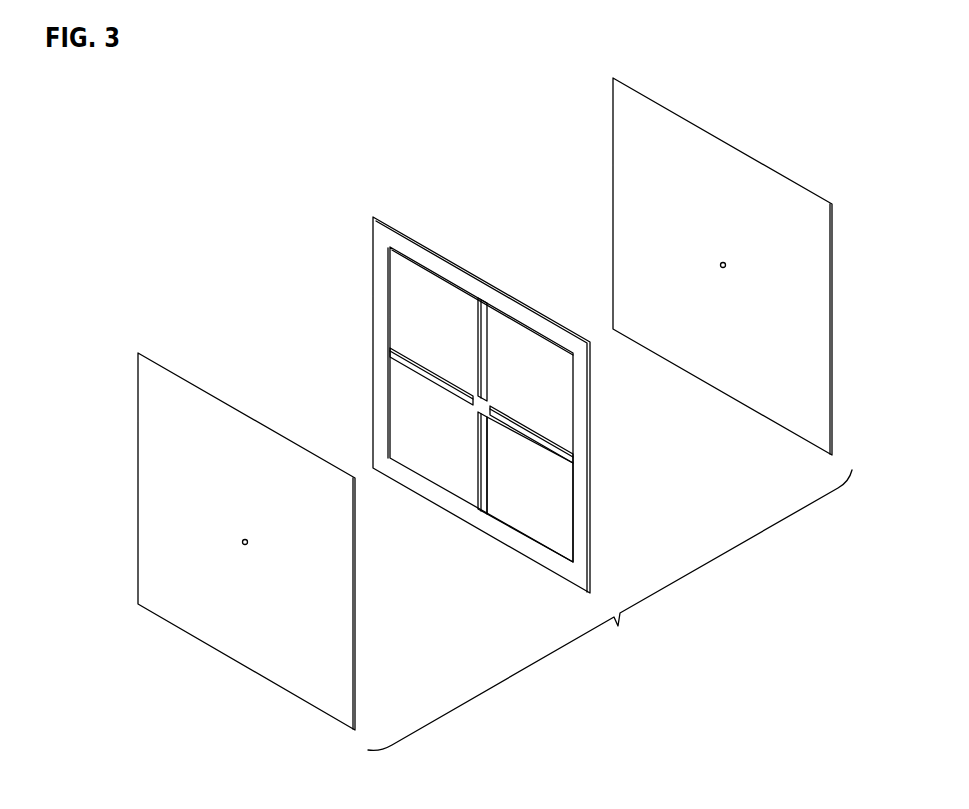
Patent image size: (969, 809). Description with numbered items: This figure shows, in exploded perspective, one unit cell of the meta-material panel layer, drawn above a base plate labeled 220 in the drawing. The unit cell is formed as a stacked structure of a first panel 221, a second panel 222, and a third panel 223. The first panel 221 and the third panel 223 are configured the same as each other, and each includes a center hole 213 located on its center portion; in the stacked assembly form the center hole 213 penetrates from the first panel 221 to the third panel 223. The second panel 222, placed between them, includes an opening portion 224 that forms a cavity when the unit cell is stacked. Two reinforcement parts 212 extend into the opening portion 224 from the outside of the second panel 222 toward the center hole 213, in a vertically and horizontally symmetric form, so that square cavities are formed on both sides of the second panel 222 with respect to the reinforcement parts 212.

The base plate 220 is at (610, 610).
The first panel 221 is at (191, 388).
The second panel 222 is at (383, 250).
The third panel 223 is at (623, 128).
The reinforcement part 212 is at (423, 380).
The opening portion 224 is at (517, 497).
The center hole 213 is at (244, 545).